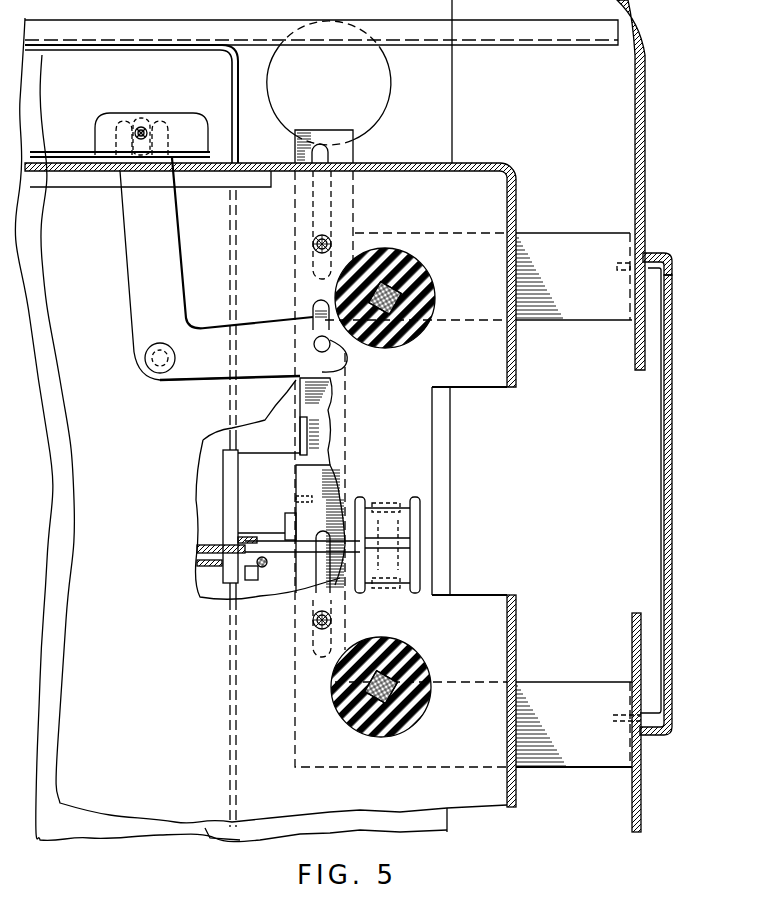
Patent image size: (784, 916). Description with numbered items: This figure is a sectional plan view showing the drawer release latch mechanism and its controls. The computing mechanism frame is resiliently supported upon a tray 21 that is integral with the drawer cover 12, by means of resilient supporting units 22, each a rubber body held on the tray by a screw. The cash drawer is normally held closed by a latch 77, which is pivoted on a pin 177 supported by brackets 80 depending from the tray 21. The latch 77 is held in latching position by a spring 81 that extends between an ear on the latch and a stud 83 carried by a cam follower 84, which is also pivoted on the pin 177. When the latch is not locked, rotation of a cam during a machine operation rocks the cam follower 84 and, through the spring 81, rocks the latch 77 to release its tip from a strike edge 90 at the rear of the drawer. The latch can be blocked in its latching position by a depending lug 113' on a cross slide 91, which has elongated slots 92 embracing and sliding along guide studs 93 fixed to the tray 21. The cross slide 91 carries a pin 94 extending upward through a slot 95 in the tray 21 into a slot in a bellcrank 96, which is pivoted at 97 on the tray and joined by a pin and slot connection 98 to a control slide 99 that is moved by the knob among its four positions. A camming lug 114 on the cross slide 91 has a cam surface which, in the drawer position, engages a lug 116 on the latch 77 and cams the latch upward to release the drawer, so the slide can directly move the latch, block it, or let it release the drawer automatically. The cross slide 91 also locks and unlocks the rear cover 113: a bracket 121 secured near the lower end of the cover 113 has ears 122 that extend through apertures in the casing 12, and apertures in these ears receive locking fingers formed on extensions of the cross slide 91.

The drawer cover 12 is at (646, 152).
The tray 21 is at (516, 388).
The resilient supporting unit 22 is at (433, 312).
The latch 77 is at (195, 563).
The brackets 80 is at (405, 580).
The spring 81 is at (302, 559).
The stud 83 is at (259, 578).
The cam follower 84 is at (238, 539).
The strike edge 90 is at (223, 471).
The cross slide 91 is at (330, 473).
The elongated slots 92 is at (326, 587).
The guide studs 93 is at (333, 237).
The pin 94 is at (338, 355).
The slot 95 is at (329, 382).
The bellcrank 96 is at (213, 372).
The pivot 97 is at (163, 371).
The pin and slot connection 98 is at (143, 128).
The control slide 99 is at (88, 152).
The rear cover 113 is at (678, 505).
The depending lug 113' is at (267, 524).
The camming lug 114 is at (299, 446).
The lug 116 is at (296, 500).
The bracket 121 is at (661, 498).
The ears 122 is at (655, 251).
The pin 177 is at (386, 513).